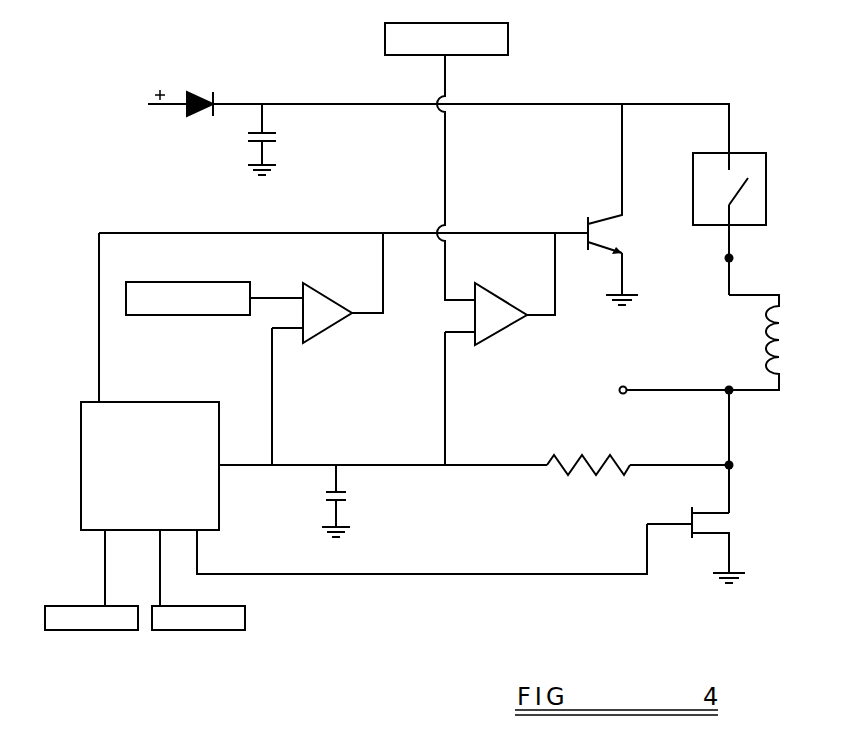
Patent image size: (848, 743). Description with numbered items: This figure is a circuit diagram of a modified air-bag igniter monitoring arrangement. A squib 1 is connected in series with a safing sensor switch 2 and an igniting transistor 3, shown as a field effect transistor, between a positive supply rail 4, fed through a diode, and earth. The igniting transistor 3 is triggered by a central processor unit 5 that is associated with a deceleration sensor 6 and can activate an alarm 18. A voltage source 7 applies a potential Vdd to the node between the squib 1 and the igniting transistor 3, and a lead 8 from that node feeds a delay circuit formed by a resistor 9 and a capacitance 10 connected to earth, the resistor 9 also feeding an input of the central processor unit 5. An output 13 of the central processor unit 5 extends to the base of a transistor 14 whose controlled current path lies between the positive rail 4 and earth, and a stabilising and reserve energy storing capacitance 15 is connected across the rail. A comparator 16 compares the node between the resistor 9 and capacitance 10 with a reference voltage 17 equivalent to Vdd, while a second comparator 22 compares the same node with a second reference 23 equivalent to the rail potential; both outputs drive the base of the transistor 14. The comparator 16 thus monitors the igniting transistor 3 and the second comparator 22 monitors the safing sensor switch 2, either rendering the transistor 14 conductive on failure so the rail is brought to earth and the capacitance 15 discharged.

The squib 1 is at (793, 350).
The safing sensor switch 2 is at (766, 202).
The igniting transistor 3 is at (718, 523).
The positive supply rail 4 is at (665, 104).
The central processor unit 5 is at (81, 497).
The deceleration sensor 6 is at (73, 632).
The voltage source 7 is at (650, 392).
The lead 8 is at (692, 460).
The resistor 9 is at (600, 470).
The capacitance 10 is at (347, 500).
The output 13 is at (99, 352).
The transistor 14 is at (593, 205).
The stabilising and reserve energy storing capacitance 15 is at (247, 143).
The comparator 16 is at (320, 290).
The reference voltage 17 is at (200, 315).
The alarm 18 is at (225, 632).
The second comparator 22 is at (500, 330).
The second reference 23 is at (385, 36).